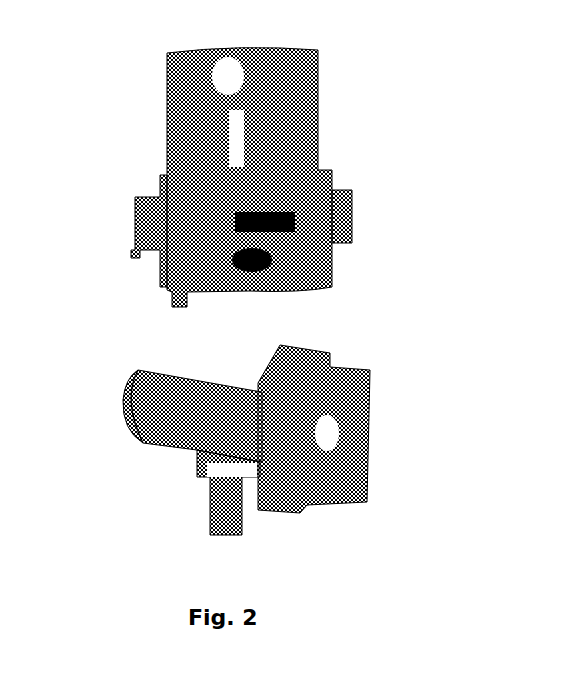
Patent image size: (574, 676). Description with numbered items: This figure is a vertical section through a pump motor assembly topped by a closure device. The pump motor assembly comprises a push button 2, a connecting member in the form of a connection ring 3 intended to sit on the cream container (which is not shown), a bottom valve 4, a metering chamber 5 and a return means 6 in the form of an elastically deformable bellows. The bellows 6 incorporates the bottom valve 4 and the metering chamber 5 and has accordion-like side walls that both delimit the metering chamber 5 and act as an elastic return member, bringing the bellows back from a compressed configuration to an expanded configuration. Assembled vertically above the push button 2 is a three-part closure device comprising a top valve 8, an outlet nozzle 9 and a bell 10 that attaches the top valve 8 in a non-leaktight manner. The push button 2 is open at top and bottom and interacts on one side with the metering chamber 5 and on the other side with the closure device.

The push button 2 is at (283, 80).
The connection ring 3 is at (352, 197).
The bottom valve 4 is at (255, 260).
The metering chamber 5 is at (262, 222).
The return means 6 is at (205, 187).
The top valve 8 is at (175, 410).
The outlet nozzle 9 is at (127, 432).
The bell 10 is at (366, 372).